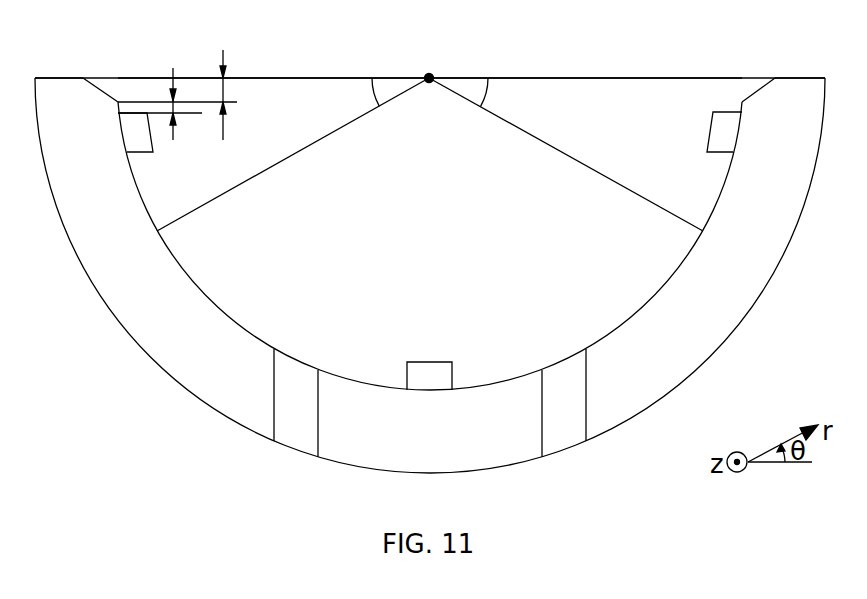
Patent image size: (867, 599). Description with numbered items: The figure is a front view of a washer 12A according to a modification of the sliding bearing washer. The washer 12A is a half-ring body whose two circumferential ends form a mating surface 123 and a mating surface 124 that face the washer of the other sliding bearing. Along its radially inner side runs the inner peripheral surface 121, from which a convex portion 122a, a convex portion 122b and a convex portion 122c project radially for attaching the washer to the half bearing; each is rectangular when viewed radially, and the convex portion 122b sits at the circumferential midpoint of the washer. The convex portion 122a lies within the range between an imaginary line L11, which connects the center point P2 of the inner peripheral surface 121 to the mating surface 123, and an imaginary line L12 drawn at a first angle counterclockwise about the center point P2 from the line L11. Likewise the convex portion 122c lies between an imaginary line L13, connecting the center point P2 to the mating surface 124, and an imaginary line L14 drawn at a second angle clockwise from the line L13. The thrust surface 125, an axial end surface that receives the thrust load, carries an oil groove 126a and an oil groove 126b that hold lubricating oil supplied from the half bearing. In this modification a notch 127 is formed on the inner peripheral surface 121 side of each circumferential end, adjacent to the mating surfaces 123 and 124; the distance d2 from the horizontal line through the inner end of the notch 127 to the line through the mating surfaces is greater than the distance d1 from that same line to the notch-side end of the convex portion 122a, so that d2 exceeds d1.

The washer 12A is at (612, 62).
The inner peripheral surface 121 is at (637, 310).
The convex portion 122a is at (140, 152).
The convex portion 122b is at (430, 362).
The convex portion 122c is at (720, 152).
The mating surface 123 is at (62, 78).
The mating surface 124 is at (798, 78).
The thrust surface 125 is at (652, 388).
The oil groove 126a is at (292, 425).
The oil groove 126b is at (565, 425).
The notch 127 is at (105, 93).
The imaginary line L11 is at (313, 78).
The imaginary line L12 is at (300, 152).
The imaginary line L13 is at (545, 78).
The imaginary line L14 is at (558, 152).
The center point P2 is at (432, 74).
The distance d1 is at (166, 106).
The distance d2 is at (191, 97).